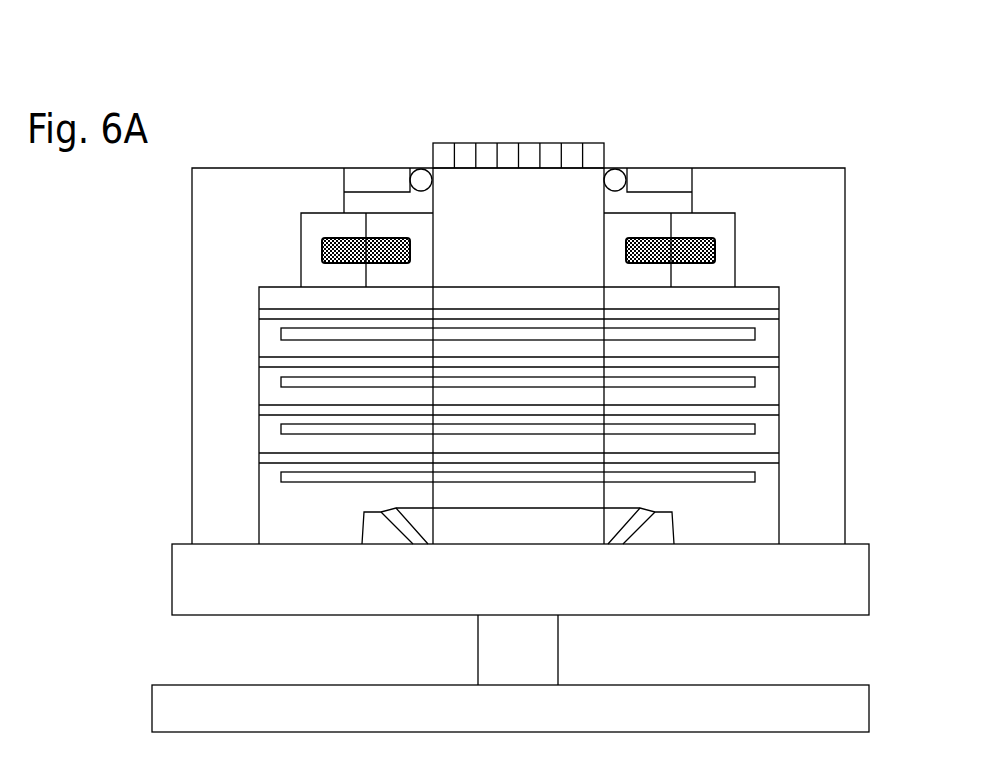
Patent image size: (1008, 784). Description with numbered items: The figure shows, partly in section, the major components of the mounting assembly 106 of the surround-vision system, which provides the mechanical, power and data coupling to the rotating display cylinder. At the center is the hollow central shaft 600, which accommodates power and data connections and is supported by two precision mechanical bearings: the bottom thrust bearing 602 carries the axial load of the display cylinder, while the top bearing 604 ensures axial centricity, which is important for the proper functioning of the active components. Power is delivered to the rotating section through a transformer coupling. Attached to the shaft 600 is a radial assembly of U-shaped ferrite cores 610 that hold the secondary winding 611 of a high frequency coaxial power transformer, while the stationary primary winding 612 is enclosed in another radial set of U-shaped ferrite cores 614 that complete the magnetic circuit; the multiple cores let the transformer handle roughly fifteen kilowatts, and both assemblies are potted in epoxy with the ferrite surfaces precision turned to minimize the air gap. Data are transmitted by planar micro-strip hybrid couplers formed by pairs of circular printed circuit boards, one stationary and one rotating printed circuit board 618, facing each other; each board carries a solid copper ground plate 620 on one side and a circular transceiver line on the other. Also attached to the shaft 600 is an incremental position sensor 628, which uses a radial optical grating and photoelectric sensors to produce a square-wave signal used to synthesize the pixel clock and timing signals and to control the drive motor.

The mounting assembly 106 is at (559, 64).
The central shaft 600 is at (569, 195).
The bottom thrust bearing 602 is at (649, 548).
The top bearing 604 is at (410, 153).
The U-shaped ferrite cores 610 is at (389, 199).
The secondary winding 611 is at (367, 226).
The primary winding 612 is at (708, 221).
The U-shaped ferrite cores 614 is at (745, 224).
The rotating printed circuit board 618 is at (274, 304).
The copper ground plate 620 is at (290, 341).
The incremental position sensor 628 is at (500, 125).